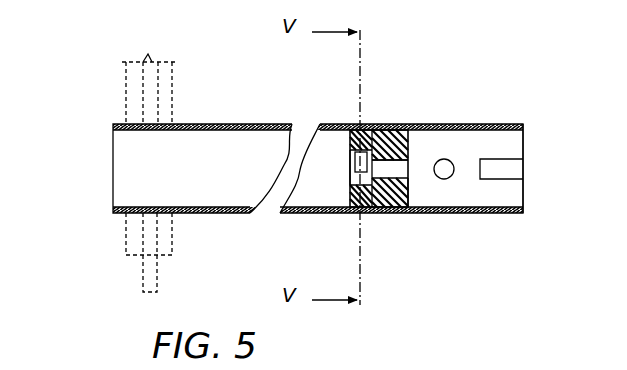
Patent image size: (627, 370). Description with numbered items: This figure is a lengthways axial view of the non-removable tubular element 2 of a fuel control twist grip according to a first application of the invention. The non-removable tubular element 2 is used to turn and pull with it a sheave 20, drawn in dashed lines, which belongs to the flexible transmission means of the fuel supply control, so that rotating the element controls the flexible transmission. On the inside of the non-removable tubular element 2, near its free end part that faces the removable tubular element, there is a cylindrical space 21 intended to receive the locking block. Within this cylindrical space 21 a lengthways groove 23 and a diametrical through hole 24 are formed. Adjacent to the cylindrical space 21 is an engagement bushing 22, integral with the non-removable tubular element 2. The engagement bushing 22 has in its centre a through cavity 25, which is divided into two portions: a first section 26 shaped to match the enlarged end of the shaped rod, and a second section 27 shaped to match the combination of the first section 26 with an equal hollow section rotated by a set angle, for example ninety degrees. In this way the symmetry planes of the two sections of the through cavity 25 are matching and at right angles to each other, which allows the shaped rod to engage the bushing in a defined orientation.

The non-removable tubular element 2 is at (232, 122).
The sheave 20 is at (163, 108).
The cylindrical space 21 is at (500, 134).
The engagement bushing 22 is at (410, 187).
The lengthways groove 23 is at (508, 165).
The diametrical through hole 24 is at (442, 169).
The through cavity 25 is at (357, 150).
The first section 26 is at (385, 162).
The second section 27 is at (352, 150).